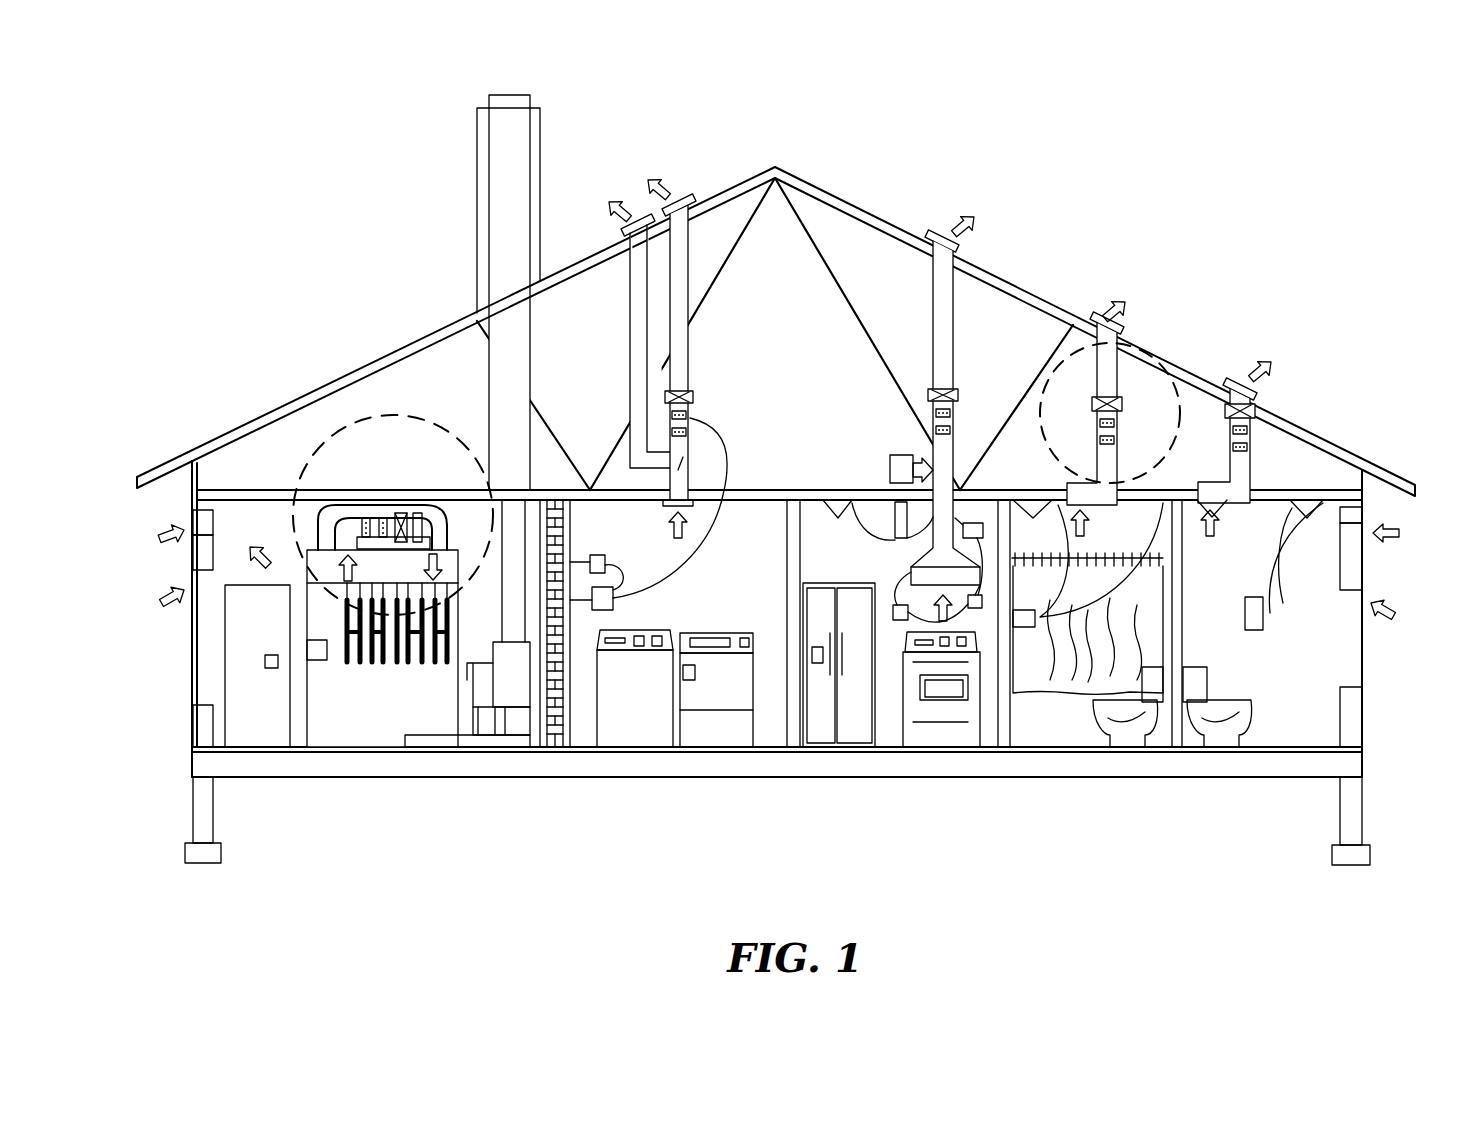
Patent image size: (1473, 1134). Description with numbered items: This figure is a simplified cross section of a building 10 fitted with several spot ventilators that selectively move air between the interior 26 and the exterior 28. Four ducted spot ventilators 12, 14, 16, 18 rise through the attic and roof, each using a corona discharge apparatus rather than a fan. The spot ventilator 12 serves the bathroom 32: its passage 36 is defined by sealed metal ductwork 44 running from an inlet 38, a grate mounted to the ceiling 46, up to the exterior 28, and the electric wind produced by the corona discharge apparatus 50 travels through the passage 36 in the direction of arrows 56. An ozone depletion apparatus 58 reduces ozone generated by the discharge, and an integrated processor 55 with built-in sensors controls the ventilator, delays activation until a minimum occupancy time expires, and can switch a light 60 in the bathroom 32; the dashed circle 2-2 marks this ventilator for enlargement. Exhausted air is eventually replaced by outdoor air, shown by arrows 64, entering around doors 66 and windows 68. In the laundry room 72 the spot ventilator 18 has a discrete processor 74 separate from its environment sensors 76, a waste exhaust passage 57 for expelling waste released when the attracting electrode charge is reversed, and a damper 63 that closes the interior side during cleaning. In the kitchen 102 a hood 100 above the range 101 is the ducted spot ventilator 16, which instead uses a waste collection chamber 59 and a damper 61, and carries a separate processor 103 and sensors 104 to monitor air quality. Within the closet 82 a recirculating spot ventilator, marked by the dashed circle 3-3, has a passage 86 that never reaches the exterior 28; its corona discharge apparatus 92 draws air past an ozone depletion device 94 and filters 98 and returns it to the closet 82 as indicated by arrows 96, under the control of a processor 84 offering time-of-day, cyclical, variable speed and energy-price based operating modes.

The building 10 is at (201, 204).
The spot ventilator 12 is at (1089, 378).
The spot ventilator 14 is at (1216, 418).
The spot ventilator 16 is at (962, 378).
The spot ventilator 18 is at (699, 380).
The interior 26 is at (762, 378).
The exterior 28 is at (1275, 162).
The bathroom 32 is at (1038, 735).
The passage 36 is at (1110, 373).
The inlet 38 is at (1162, 505).
The ductwork 44 is at (1097, 463).
The ceiling 46 is at (1165, 513).
The corona discharge apparatus 50 is at (1097, 430).
The processor 55 is at (1020, 628).
The arrows 56 is at (1123, 300).
The waste exhaust passage 57 is at (635, 370).
The ozone depletion apparatus 58 is at (1117, 407).
The waste collection chamber 59 is at (890, 468).
The light 60 is at (1039, 540).
The damper 61 is at (930, 460).
The damper 63 is at (683, 463).
The arrows 64 is at (168, 580).
The doors 66 is at (223, 670).
The windows 68 is at (190, 627).
The laundry room 72 is at (720, 600).
The processor 74 is at (603, 613).
The environment sensors 76 is at (598, 555).
The closet 82 is at (377, 717).
The processor 84 is at (313, 661).
The passage 86 is at (336, 638).
The corona discharge apparatus 92 is at (368, 517).
The ozone depletion device 94 is at (402, 512).
The arrows 96 is at (350, 573).
The filters 98 is at (419, 512).
The hood 100 is at (897, 622).
The range 101 is at (983, 690).
The kitchen 102 is at (810, 555).
The processor 103 is at (903, 622).
The sensors 104 is at (991, 494).
The section line 2-2 is at (1150, 360).
The section line 3-3 is at (372, 413).